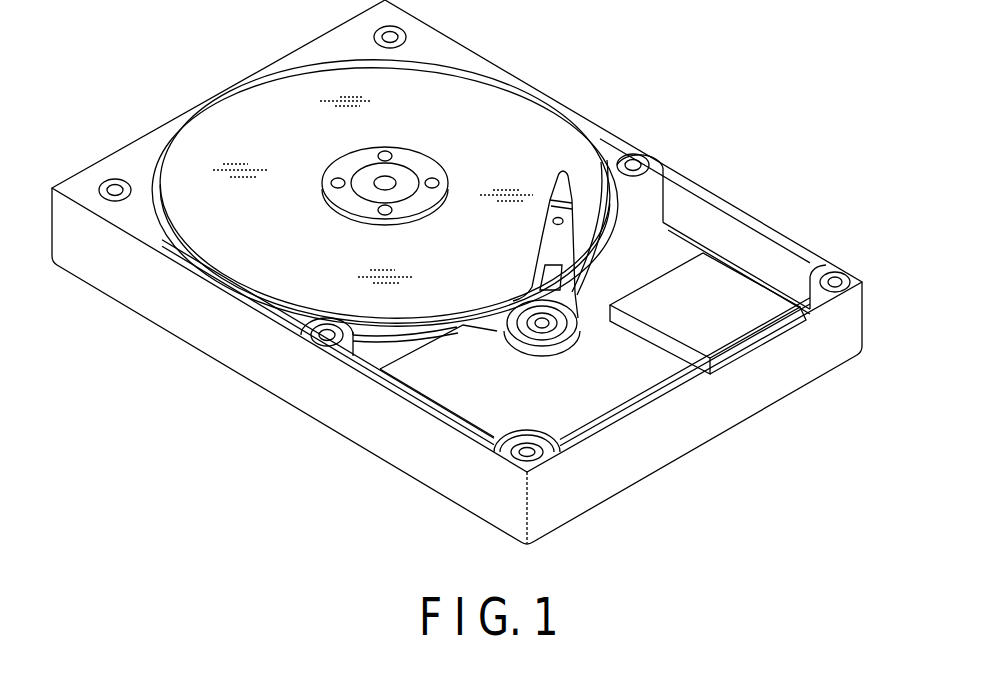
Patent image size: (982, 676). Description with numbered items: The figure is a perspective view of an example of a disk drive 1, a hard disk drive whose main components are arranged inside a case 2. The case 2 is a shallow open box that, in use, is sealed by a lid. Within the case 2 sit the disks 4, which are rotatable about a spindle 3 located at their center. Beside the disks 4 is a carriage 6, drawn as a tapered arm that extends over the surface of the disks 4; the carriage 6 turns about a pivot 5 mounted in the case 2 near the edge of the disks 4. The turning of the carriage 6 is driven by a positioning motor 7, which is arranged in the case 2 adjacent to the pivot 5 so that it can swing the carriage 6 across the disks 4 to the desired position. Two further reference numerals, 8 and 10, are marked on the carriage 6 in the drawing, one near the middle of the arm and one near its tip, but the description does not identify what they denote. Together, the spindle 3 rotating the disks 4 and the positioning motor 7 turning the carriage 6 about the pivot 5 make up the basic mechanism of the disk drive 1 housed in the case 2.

The disk drive 1 is at (457, 272).
The case 2 is at (457, 272).
The spindle 3 is at (400, 172).
The disks 4 is at (498, 113).
The pivot 5 is at (560, 352).
The carriage 6 is at (600, 263).
The positioning motor 7 is at (463, 407).
The actuator arm (head suspension) 8 is at (583, 203).
The magnetic head 10 is at (555, 188).